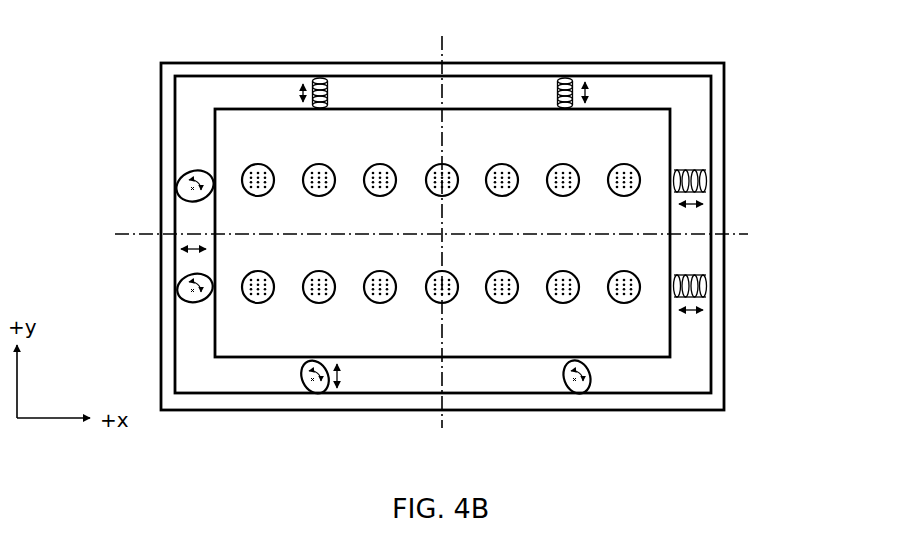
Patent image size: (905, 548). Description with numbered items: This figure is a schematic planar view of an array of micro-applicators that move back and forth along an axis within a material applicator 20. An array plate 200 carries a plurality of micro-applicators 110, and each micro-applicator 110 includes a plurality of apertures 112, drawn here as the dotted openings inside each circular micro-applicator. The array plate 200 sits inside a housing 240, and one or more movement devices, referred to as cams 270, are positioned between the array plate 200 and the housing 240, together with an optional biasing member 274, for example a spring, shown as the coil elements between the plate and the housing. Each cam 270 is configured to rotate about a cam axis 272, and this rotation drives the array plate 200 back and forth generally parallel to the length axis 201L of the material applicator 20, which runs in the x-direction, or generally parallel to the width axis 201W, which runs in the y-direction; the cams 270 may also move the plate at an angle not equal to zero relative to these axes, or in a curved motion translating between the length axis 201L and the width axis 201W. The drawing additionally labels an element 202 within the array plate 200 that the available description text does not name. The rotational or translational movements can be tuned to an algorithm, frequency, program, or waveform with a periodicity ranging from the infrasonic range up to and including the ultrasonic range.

The material applicator 20 is at (732, 57).
The housing 240 is at (729, 98).
The array plate 200 is at (211, 145).
The display area 202 is at (660, 329).
The width axis 201W is at (441, 50).
The length axis 201L is at (755, 236).
The micro-applicator 110 is at (331, 168).
The aperture 112 is at (504, 177).
The biasing member 274 is at (557, 92).
The cam 270 is at (198, 275).
The cam axis 272 is at (190, 298).